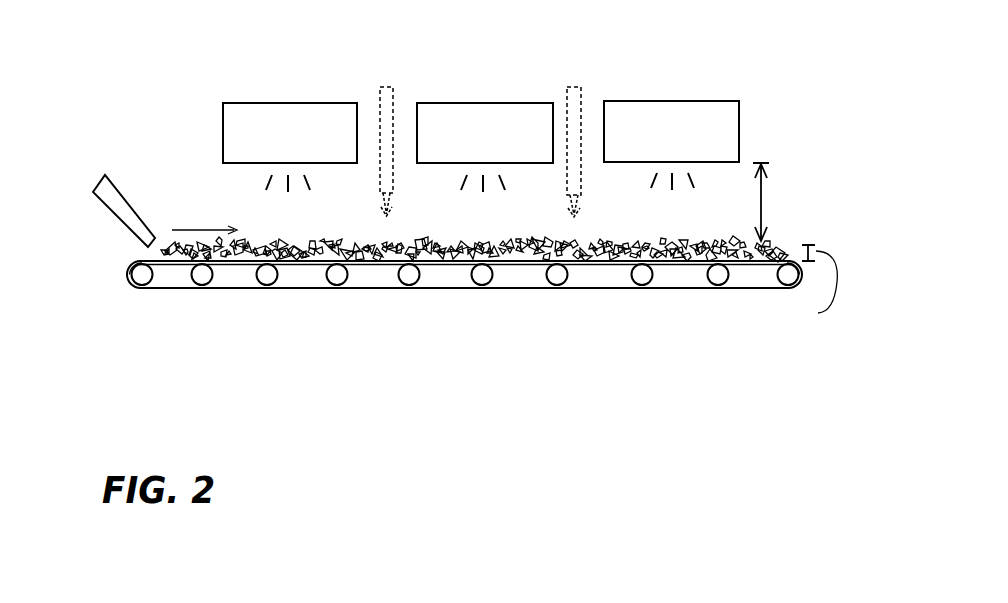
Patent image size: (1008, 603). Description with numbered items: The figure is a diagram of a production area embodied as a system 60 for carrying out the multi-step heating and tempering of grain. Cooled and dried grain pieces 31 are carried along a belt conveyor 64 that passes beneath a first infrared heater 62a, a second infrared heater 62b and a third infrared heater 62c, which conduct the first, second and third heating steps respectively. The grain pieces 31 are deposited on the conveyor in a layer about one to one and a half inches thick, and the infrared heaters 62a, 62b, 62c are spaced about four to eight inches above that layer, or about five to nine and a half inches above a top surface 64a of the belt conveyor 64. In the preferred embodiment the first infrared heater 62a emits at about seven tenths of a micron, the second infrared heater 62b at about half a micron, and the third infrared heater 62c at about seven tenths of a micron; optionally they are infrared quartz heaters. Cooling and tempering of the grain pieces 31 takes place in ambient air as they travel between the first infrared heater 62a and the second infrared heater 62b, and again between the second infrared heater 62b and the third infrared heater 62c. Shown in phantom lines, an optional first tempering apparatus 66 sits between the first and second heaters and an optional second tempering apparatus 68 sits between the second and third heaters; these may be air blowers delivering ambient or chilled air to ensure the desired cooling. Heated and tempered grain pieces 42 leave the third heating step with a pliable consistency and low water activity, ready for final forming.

The system 60 is at (640, 387).
The first infrared heater 62a is at (304, 103).
The second infrared heater 62b is at (492, 103).
The third infrared heater 62c is at (673, 100).
The first tempering apparatus 66 is at (390, 86).
The second tempering apparatus 68 is at (576, 86).
The belt conveyor 64 is at (187, 321).
The top surface of belt conveyor 64a is at (141, 249).
The cooled and dried grain pieces 31 is at (350, 244).
The heated and tempered grain pieces 42 is at (778, 244).